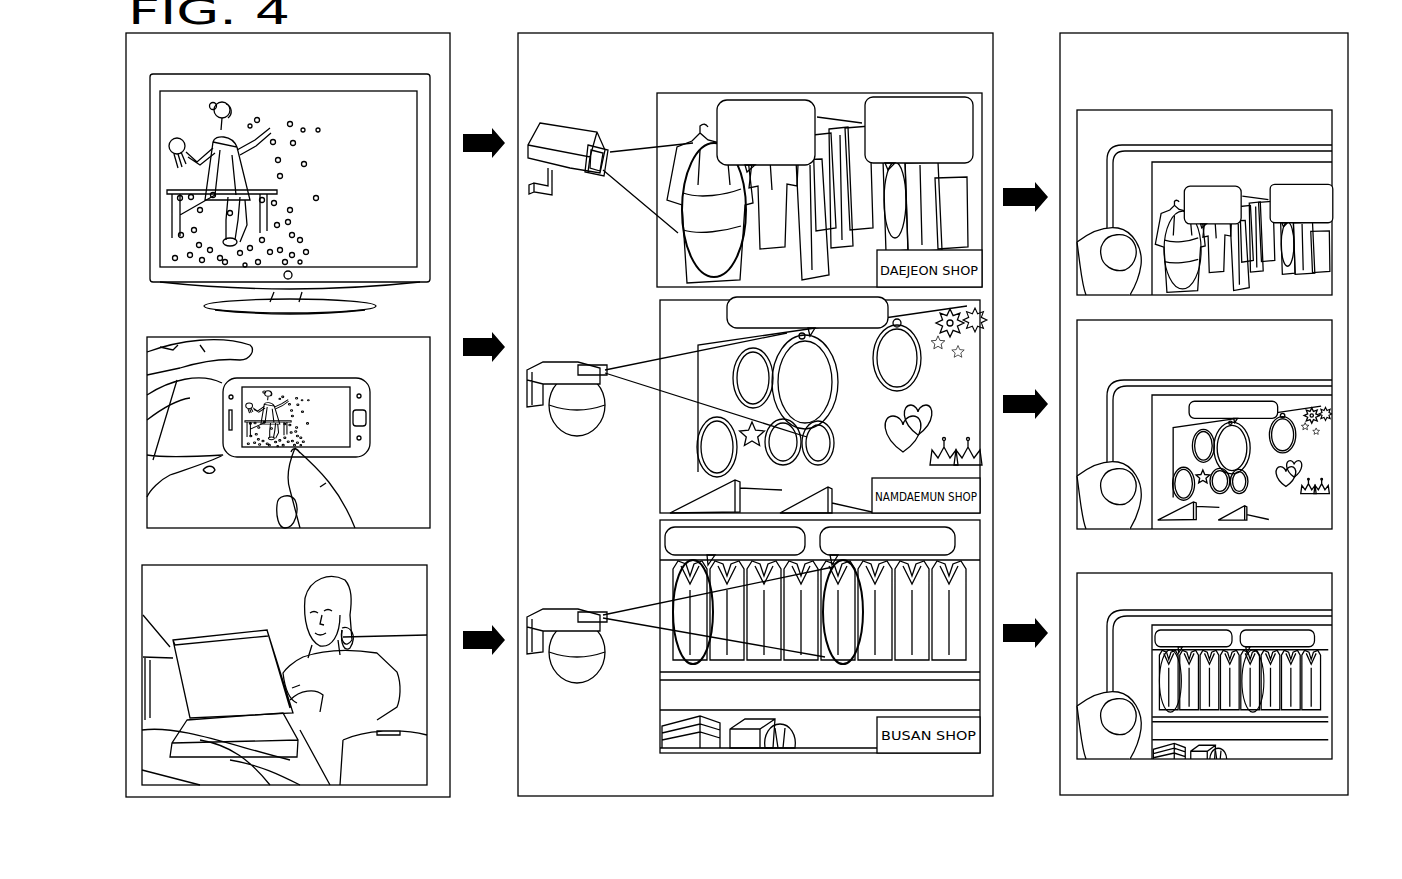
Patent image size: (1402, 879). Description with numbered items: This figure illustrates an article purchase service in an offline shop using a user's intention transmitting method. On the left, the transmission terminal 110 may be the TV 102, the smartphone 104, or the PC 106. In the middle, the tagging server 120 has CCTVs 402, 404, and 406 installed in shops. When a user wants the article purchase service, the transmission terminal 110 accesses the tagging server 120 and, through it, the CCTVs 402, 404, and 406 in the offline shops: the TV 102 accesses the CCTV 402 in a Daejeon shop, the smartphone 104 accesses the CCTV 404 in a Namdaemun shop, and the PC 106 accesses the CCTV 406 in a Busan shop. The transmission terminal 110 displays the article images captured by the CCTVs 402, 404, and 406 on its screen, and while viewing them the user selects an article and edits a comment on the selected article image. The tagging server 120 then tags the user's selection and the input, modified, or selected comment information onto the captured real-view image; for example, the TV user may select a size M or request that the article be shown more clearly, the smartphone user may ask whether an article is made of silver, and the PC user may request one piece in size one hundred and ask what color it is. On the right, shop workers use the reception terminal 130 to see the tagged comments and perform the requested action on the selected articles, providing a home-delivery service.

The transmission terminal 110 is at (328, 33).
The TV 102 is at (357, 73).
The smartphone 104 is at (355, 335).
The PC 106 is at (352, 565).
The tagging server 120 is at (757, 33).
The CCTV 402 is at (570, 125).
The CCTV 404 is at (567, 360).
The CCTV 406 is at (567, 607).
The reception terminal 130 is at (1207, 33).